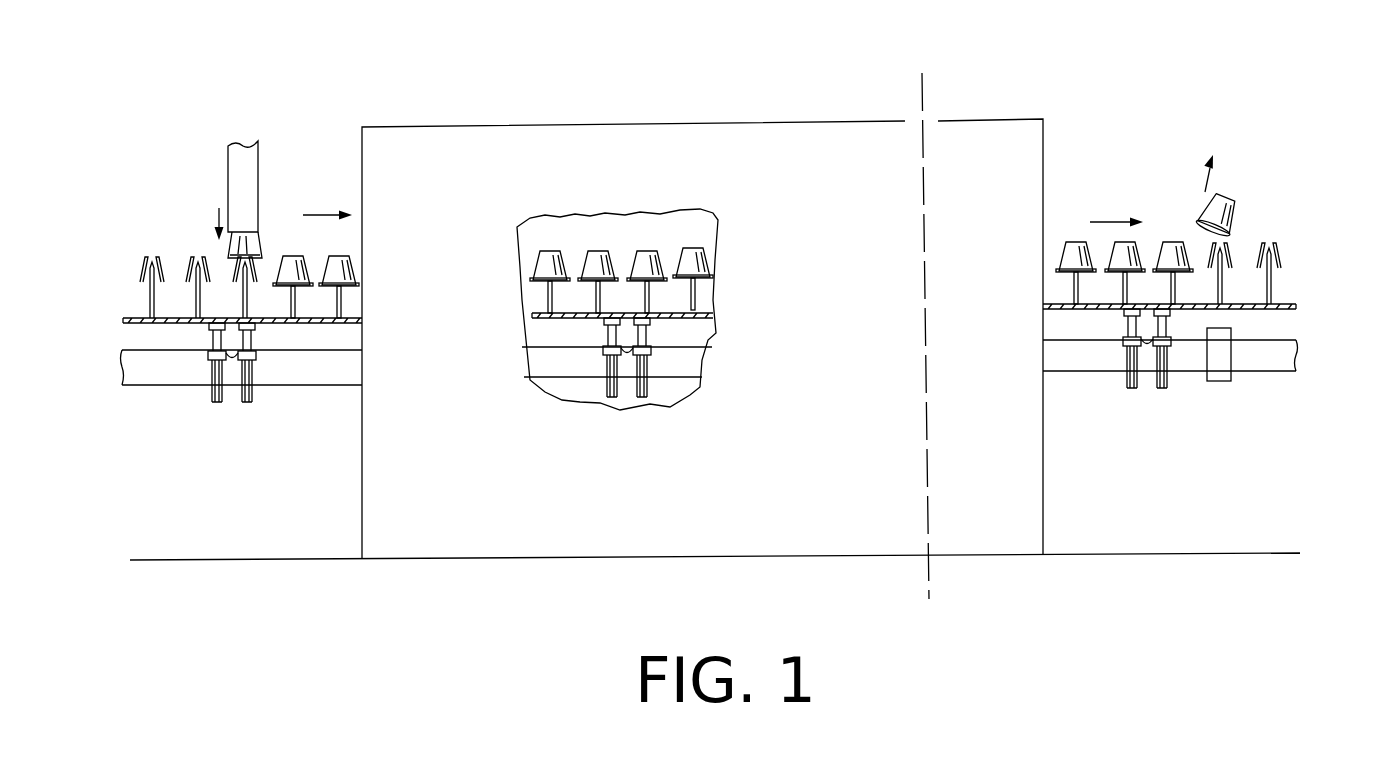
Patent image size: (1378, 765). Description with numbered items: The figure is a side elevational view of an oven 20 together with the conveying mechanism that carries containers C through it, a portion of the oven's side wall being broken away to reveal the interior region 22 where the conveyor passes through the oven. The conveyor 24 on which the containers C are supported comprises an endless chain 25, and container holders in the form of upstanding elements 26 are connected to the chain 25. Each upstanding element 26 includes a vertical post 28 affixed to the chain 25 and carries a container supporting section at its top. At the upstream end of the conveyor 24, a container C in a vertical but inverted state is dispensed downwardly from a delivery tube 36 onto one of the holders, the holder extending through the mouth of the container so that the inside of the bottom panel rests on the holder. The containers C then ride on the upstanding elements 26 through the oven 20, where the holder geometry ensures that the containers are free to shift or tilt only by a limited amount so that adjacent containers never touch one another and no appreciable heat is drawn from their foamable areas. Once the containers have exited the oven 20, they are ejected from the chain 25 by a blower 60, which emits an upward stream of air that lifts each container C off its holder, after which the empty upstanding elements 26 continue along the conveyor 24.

The housing 20 is at (489, 112).
The cutaway interior region 22 is at (625, 232).
The conveyor 24 is at (125, 308).
The endless chain 25 is at (133, 326).
The upstanding element 26 is at (149, 242).
The vertical post 28 is at (162, 297).
The delivery tube 36 is at (258, 176).
The blower 60 is at (1218, 394).
The container C is at (289, 242).